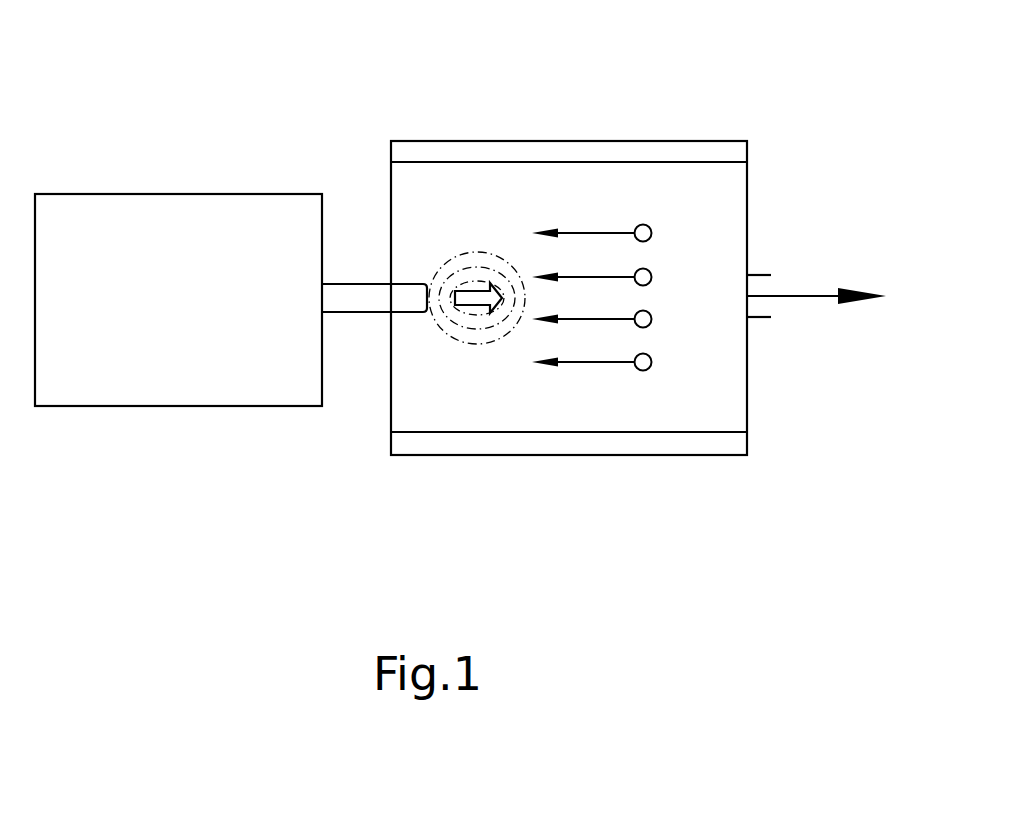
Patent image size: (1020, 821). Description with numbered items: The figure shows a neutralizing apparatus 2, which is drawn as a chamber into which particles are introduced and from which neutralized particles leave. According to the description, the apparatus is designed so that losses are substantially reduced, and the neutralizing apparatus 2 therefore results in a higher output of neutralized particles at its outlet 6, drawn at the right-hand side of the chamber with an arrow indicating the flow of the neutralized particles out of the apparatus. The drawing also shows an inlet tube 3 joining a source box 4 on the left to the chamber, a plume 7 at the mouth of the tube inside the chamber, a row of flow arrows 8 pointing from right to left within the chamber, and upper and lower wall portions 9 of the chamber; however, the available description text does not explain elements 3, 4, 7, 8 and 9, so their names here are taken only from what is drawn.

The neutralizing apparatus 2 is at (607, 112).
The inlet tube 3 is at (390, 284).
The gas source 4 is at (86, 407).
The outlet 6 is at (790, 295).
The plasma / gas plume 7 is at (457, 268).
The flow arrows 8 is at (602, 395).
The chamber walls 9 is at (728, 148).